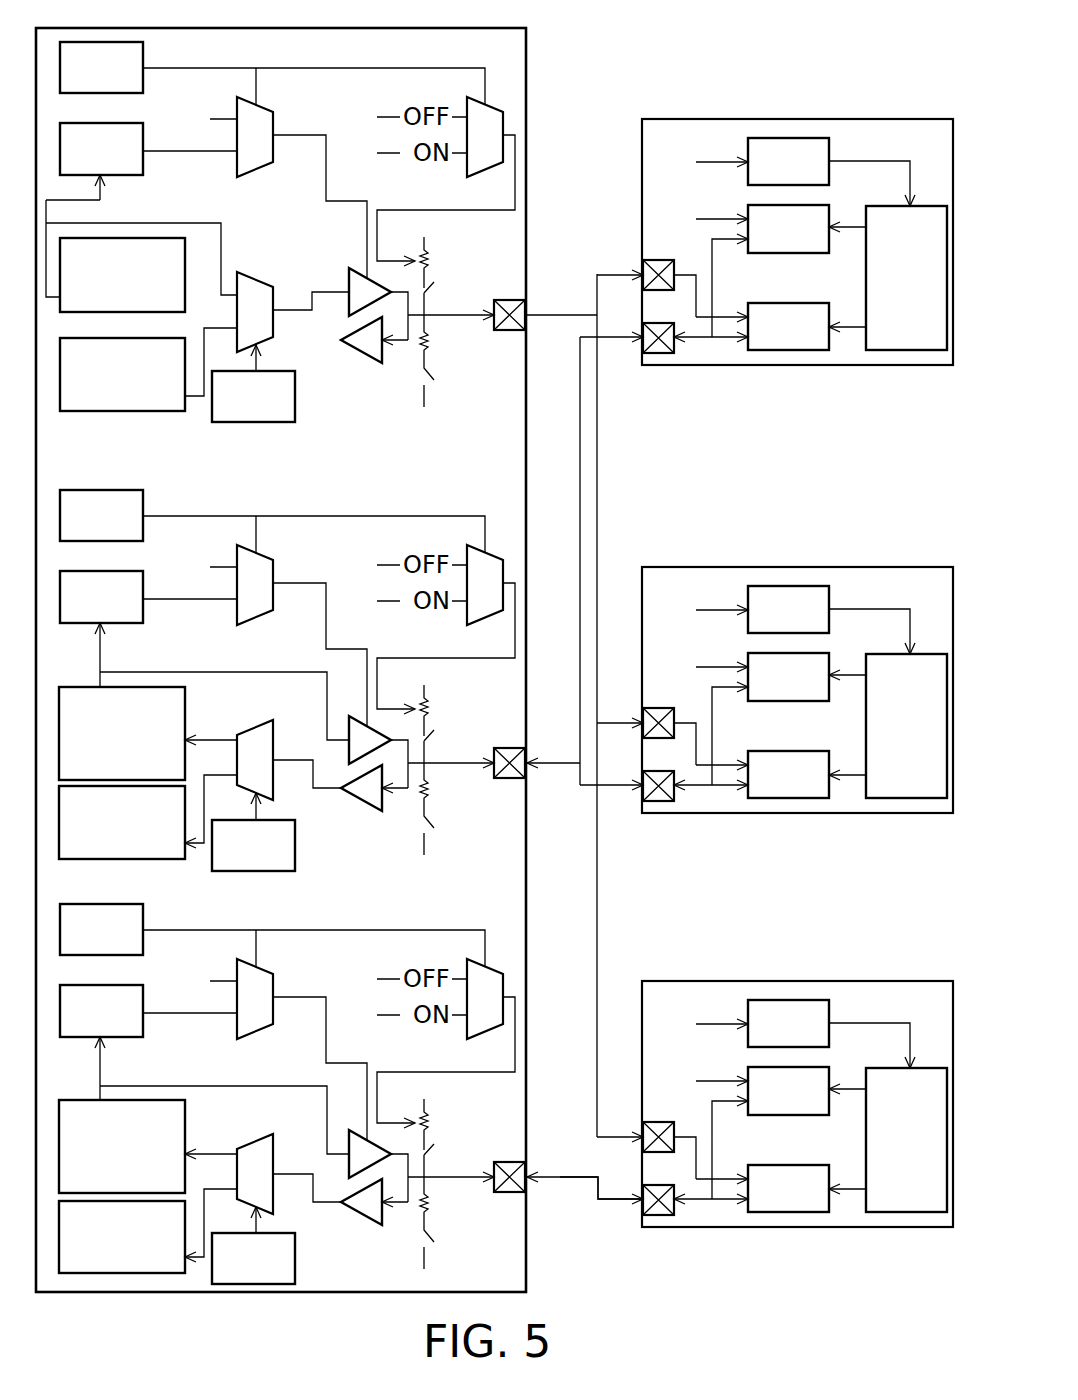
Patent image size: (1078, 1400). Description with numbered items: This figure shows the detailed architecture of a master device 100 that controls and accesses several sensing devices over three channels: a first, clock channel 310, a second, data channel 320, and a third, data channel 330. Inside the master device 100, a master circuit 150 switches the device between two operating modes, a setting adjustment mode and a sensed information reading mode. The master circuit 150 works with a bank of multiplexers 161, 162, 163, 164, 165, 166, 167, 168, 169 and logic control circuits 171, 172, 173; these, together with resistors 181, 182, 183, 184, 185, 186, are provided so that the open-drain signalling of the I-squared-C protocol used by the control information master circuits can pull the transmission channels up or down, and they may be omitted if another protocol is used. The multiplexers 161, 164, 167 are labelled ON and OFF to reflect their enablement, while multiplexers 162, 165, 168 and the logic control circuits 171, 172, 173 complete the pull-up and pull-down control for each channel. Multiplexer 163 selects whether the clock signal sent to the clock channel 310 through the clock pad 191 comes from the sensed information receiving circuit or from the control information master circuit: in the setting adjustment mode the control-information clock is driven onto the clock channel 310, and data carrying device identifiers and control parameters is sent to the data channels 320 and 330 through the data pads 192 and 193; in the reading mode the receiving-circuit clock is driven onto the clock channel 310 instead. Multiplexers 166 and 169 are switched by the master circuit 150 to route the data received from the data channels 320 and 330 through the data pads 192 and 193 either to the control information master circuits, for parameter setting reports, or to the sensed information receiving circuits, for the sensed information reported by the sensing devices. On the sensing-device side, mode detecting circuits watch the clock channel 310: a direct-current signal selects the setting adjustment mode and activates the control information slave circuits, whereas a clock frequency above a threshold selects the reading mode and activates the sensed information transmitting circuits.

The master device 100 is at (528, 41).
The master circuit 150 is at (80, 81).
The logic control circuit 171 is at (80, 162).
The logic control circuit 172 is at (80, 610).
The logic control circuit 173 is at (80, 1024).
The multiplexer 161 is at (512, 86).
The multiplexer 162 is at (276, 116).
The multiplexer 163 is at (257, 275).
The multiplexer 164 is at (512, 534).
The multiplexer 165 is at (276, 564).
The multiplexer 166 is at (252, 726).
The multiplexer 167 is at (512, 948).
The multiplexer 168 is at (276, 978).
The multiplexer 169 is at (252, 1140).
The resistor 181 is at (440, 255).
The resistor 182 is at (432, 346).
The resistor 183 is at (440, 703).
The resistor 184 is at (432, 796).
The resistor 185 is at (440, 1116).
The resistor 186 is at (432, 1209).
The clock pad 191 is at (513, 300).
The data pad 192 is at (515, 748).
The data pad 193 is at (512, 1162).
The first channel 310 is at (545, 313).
The second channel 320 is at (533, 768).
The third channel 330 is at (557, 1173).